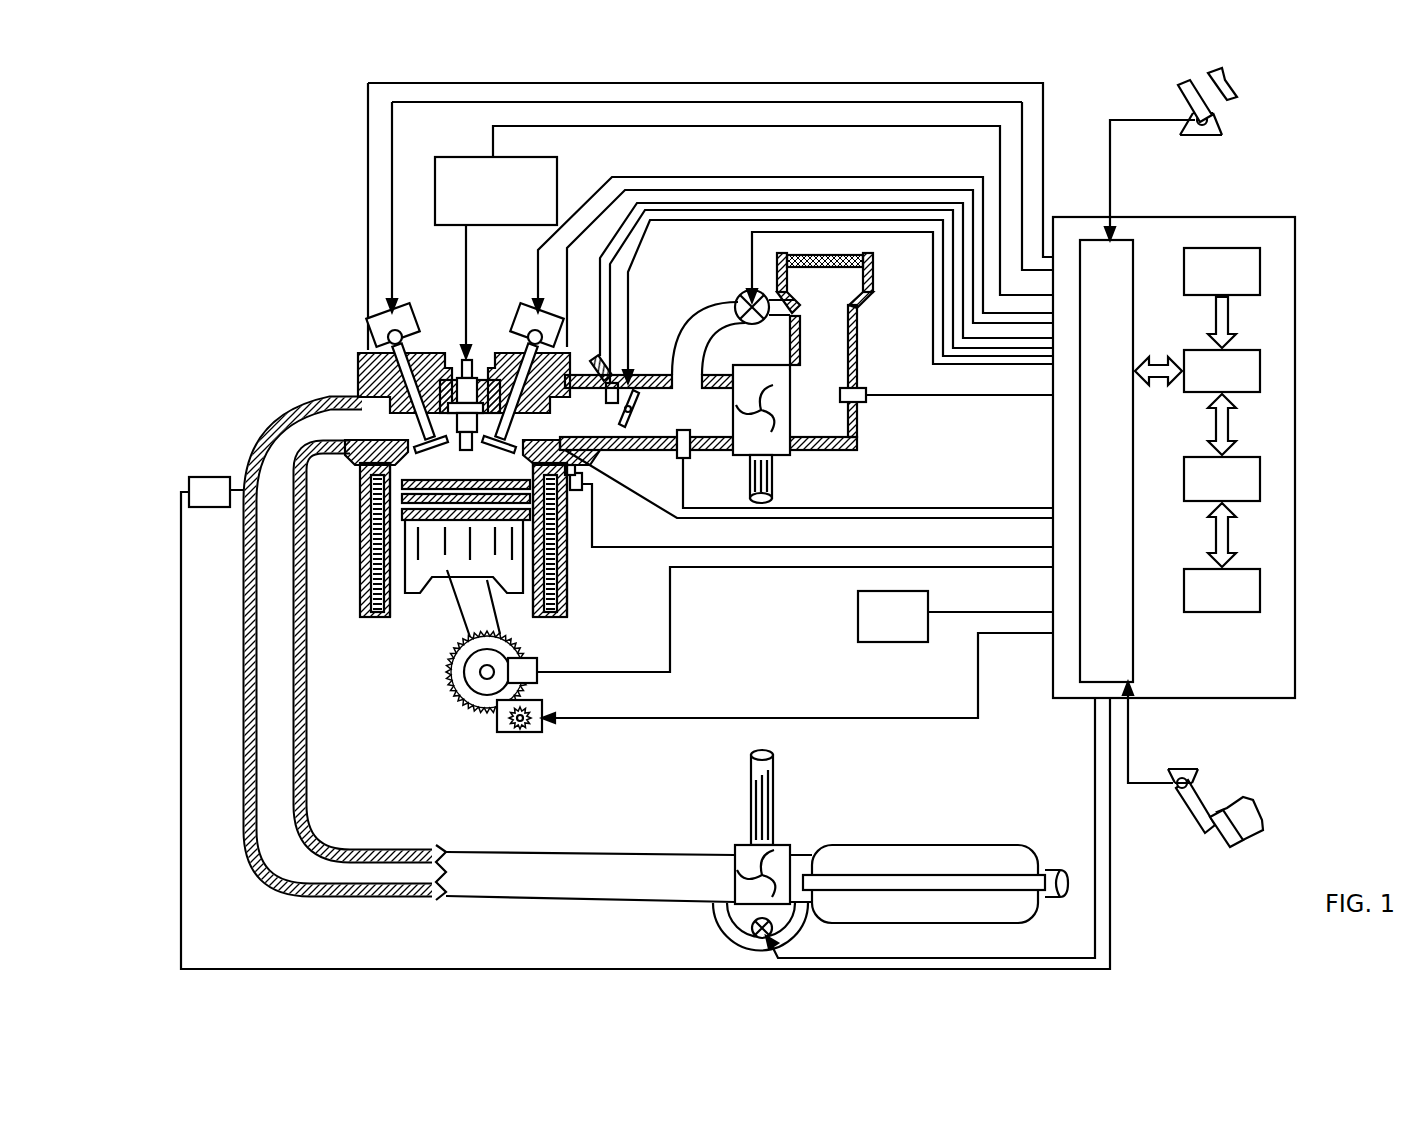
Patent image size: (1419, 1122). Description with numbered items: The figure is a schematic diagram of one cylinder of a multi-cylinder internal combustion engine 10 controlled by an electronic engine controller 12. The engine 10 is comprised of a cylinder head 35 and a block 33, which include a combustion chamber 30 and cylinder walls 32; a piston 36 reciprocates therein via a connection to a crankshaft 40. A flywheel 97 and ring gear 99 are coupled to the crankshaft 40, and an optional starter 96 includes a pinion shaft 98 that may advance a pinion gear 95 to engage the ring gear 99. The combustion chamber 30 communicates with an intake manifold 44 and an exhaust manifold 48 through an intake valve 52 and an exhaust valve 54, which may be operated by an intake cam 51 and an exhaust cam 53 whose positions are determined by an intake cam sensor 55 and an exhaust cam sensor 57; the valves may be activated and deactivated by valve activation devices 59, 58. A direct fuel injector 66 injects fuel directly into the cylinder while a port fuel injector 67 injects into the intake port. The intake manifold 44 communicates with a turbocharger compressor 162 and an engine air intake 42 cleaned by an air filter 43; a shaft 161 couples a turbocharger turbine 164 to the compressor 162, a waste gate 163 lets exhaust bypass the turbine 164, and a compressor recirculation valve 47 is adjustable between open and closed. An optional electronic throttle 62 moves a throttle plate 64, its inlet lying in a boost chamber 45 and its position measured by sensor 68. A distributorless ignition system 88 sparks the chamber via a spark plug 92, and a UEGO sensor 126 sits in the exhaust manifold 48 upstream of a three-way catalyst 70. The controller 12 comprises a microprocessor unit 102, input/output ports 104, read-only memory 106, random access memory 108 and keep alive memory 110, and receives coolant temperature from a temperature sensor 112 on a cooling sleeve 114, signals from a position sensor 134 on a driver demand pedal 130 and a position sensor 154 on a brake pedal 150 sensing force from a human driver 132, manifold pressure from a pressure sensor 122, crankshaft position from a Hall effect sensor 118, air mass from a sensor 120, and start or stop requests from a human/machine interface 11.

The internal combustion engine 10 is at (292, 303).
The human/machine interface 11 is at (969, 616).
The electronic engine controller 12 is at (1295, 220).
The combustion chamber 30 is at (357, 572).
The cylinder walls 32 is at (404, 624).
The block 33 is at (357, 502).
The cylinder head 35 is at (358, 355).
The piston 36 is at (447, 567).
The crankshaft 40 is at (470, 702).
The engine air intake 42 is at (692, 275).
The air filter 43 is at (840, 268).
The intake manifold 44 is at (649, 398).
The boost chamber 45 is at (708, 377).
The compressor recirculation valve 47 is at (745, 302).
The exhaust manifold 48 is at (492, 652).
The intake cam 51 is at (530, 318).
The intake valve 52 is at (508, 428).
The exhaust cam 53 is at (400, 318).
The exhaust valve 54 is at (362, 397).
The intake cam sensor 55 is at (548, 340).
The exhaust cam sensor 57 is at (388, 325).
The valve activation device 58 is at (402, 338).
The valve activation device 59 is at (526, 338).
The electronic throttle 62 is at (636, 404).
The throttle plate 64 is at (630, 420).
The direct fuel injector 66 is at (582, 486).
The port fuel injector 67 is at (601, 372).
The throttle position sensor 68 is at (624, 384).
The three-way catalyst 70 is at (840, 846).
The distributorless ignition system 88 is at (557, 167).
The spark plug 92 is at (470, 356).
The pinion gear 95 is at (521, 730).
The starter 96 is at (542, 726).
The flywheel 97 is at (455, 676).
The pinion shaft 98 is at (514, 732).
The ring gear 99 is at (478, 712).
The microprocessor unit 102 is at (1260, 372).
The input/output ports 104 is at (1134, 240).
The read-only memory 106 is at (1260, 270).
The random access memory 108 is at (1260, 480).
The keep alive memory 110 is at (1260, 590).
The temperature sensor 112 is at (640, 512).
The cooling sleeve 114 is at (567, 573).
The Hall effect sensor 118 is at (537, 664).
The air mass sensor 120 is at (866, 393).
The pressure sensor 122 is at (676, 452).
The Universal Exhaust Gas Oxygen sensor 126 is at (189, 488).
The driver demand pedal 130 is at (1188, 92).
The human driver 132 is at (1237, 92).
The position sensor 134 is at (1222, 120).
The brake pedal 150 is at (1210, 830).
The position sensor 154 is at (1177, 776).
The shaft 161 is at (750, 480).
The turbocharger compressor 162 is at (770, 456).
The waste gate 163 is at (753, 933).
The turbocharger turbine 164 is at (740, 845).